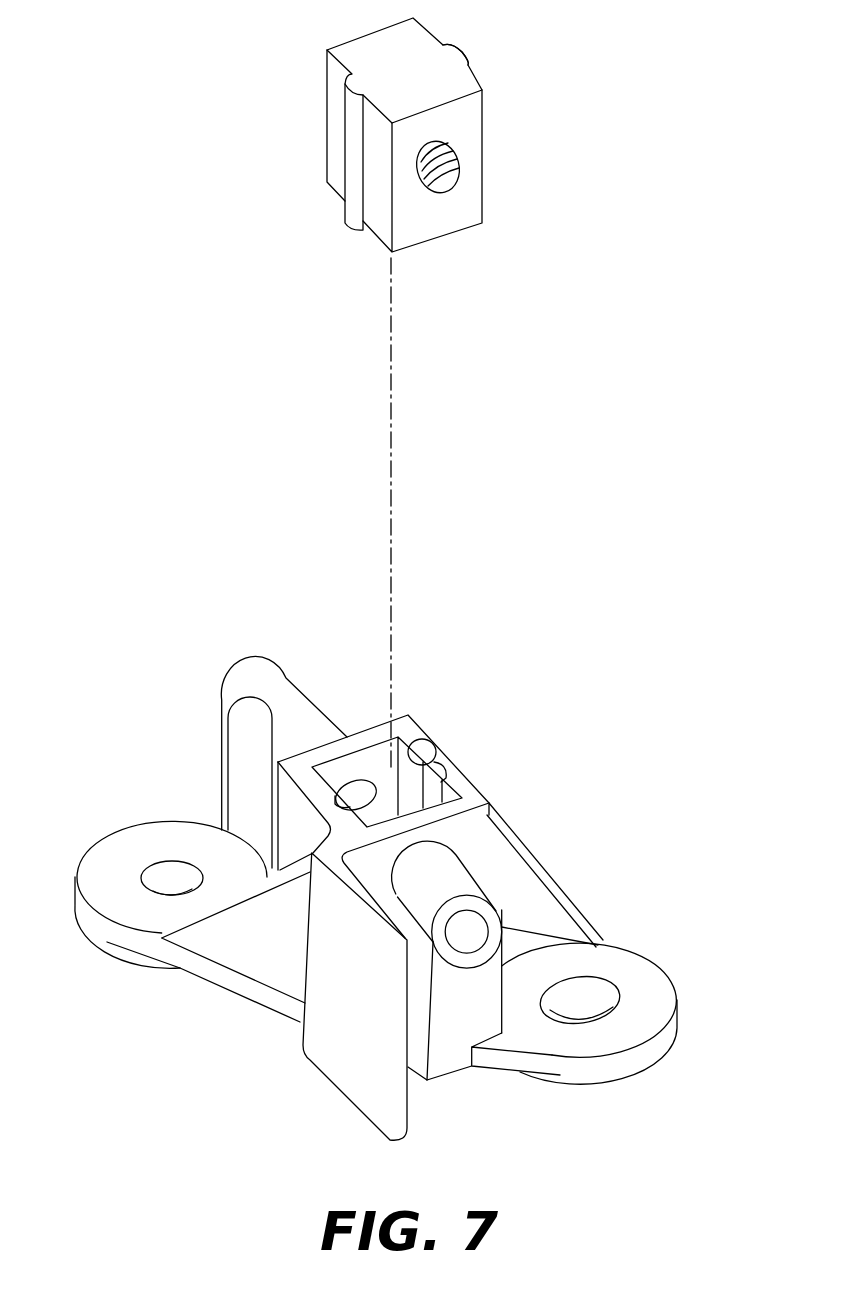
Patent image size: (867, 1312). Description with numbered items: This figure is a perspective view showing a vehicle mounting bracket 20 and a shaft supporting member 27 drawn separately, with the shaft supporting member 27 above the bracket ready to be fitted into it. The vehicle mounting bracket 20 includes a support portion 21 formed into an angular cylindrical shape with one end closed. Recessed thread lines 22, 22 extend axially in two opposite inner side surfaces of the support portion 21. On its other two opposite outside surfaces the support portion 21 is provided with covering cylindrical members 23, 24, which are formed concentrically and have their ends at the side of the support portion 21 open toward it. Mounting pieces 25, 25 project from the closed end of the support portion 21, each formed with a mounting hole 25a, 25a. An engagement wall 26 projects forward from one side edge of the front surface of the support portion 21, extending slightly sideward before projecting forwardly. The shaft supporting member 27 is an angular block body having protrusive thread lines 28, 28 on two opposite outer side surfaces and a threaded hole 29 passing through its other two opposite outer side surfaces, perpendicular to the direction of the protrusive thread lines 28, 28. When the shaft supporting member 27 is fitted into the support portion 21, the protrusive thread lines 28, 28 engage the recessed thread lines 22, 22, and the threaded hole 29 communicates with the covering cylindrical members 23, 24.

The vehicle mounting bracket 20 is at (578, 902).
The support portion 21 is at (415, 727).
The recessed thread lines 22 is at (363, 788).
The covering cylindrical member 23 is at (450, 882).
The covering cylindrical member 24 is at (280, 692).
The mounting pieces 25 is at (123, 842).
The mounting holes 25a is at (160, 880).
The engagement wall 26 is at (347, 1083).
The shaft supporting member 27 is at (482, 160).
The protrusive thread lines 28 is at (470, 58).
The threaded hole 29 is at (443, 181).